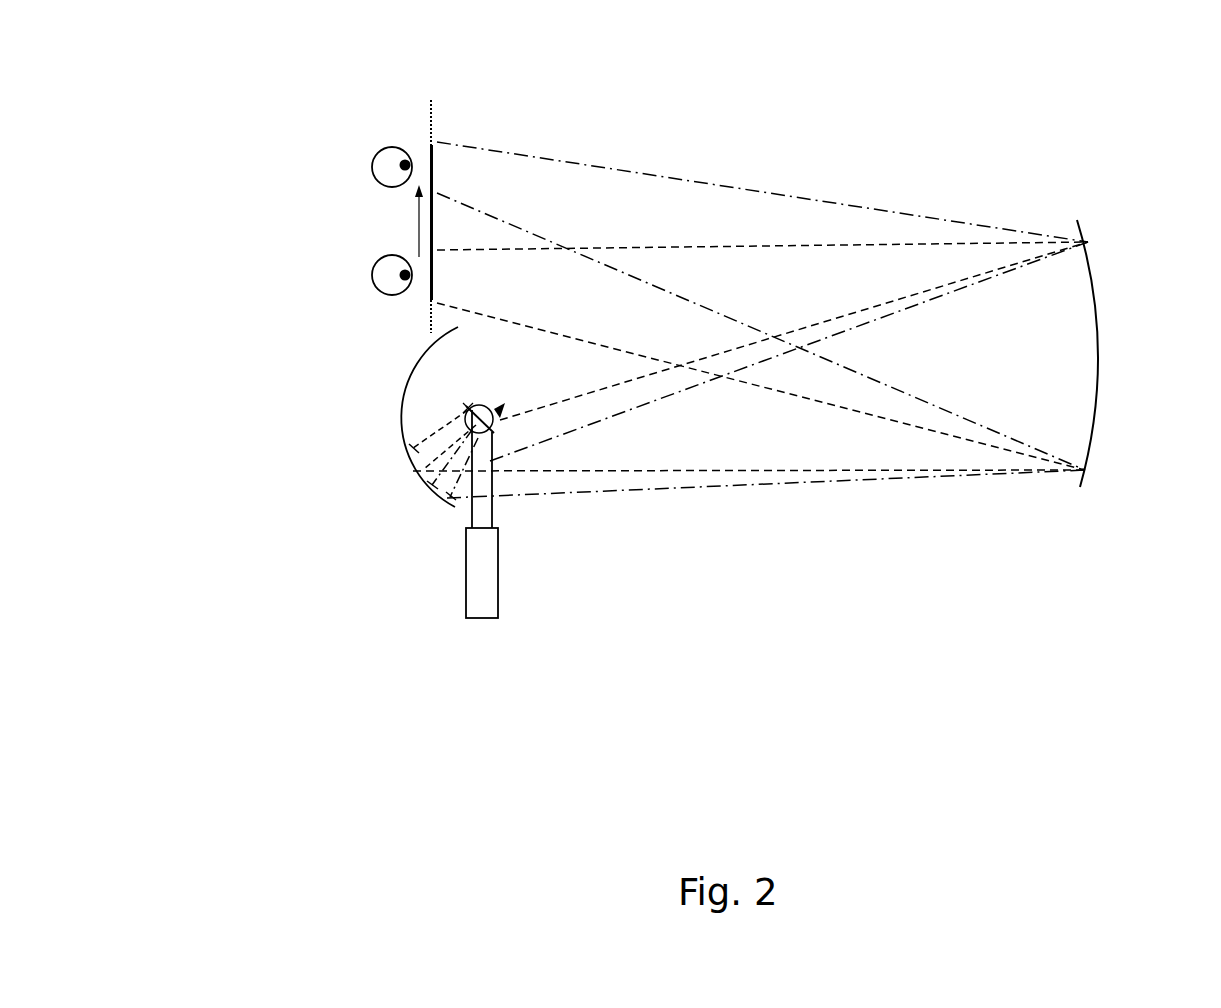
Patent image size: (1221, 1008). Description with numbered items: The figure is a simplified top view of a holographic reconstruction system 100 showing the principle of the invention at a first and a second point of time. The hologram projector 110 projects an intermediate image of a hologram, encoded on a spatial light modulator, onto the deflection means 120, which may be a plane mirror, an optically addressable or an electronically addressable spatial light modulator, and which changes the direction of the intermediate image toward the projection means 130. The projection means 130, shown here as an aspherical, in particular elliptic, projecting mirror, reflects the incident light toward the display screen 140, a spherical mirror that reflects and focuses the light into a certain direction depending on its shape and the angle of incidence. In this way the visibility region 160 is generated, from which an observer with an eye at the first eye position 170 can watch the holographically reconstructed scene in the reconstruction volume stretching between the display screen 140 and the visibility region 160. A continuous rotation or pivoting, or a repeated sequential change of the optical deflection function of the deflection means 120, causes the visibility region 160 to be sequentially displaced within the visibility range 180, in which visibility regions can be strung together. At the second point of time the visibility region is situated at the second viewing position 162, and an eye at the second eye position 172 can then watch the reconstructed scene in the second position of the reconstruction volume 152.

The holographic reconstruction system 100 is at (288, 182).
The hologram projector 110 is at (500, 570).
The deflection means 120 is at (500, 428).
The projection means 130 is at (424, 480).
The display screen 140 is at (1098, 352).
The second position of the reconstruction volume 152 is at (793, 218).
The visibility region 160 is at (430, 293).
The second viewing position 162 is at (430, 145).
The first eye position 170 is at (372, 266).
The second eye position 172 is at (372, 158).
The visibility range 180 is at (433, 110).